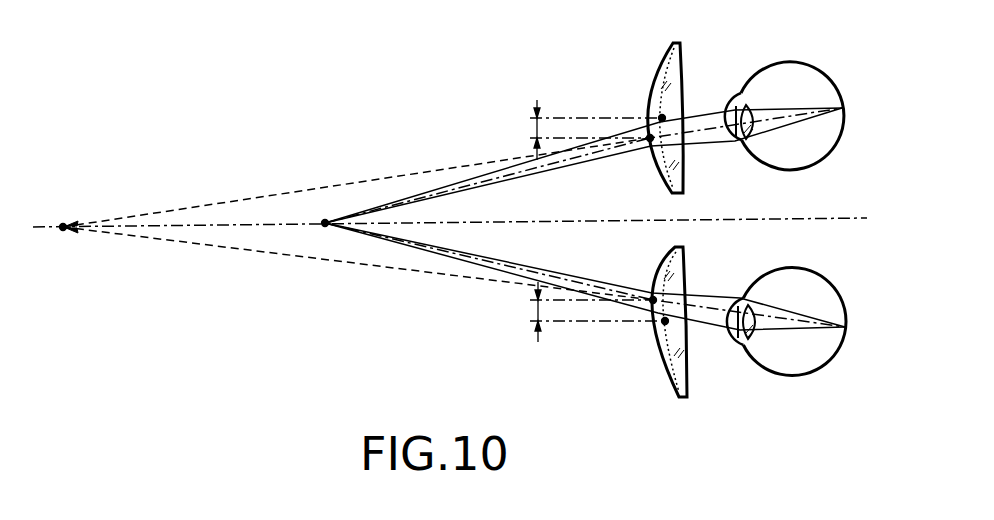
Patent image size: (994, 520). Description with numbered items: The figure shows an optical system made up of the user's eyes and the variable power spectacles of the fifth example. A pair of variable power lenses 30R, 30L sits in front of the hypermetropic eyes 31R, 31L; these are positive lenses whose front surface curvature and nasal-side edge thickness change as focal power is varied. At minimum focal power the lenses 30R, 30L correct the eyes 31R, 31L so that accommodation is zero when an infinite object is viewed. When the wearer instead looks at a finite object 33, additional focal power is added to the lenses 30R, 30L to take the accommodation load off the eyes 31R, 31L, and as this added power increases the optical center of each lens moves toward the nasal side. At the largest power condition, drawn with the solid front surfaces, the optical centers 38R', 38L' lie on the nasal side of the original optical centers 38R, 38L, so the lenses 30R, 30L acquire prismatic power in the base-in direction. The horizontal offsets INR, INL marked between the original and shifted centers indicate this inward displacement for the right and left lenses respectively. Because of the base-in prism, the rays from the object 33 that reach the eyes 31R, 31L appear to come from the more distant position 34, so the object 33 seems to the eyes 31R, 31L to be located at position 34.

The variable power lens 30R is at (660, 68).
The variable power lens 30L is at (663, 360).
The eye 31R is at (803, 63).
The eye 31L is at (774, 373).
The finite object 33 is at (325, 226).
The position 34 is at (63, 230).
The original optical center 38R is at (696, 89).
The optical center 38R' is at (615, 168).
The original optical center 38L is at (701, 352).
The optical center 38L' is at (619, 272).
The inset of right lens INR is at (570, 130).
The inset of left lens INL is at (574, 312).